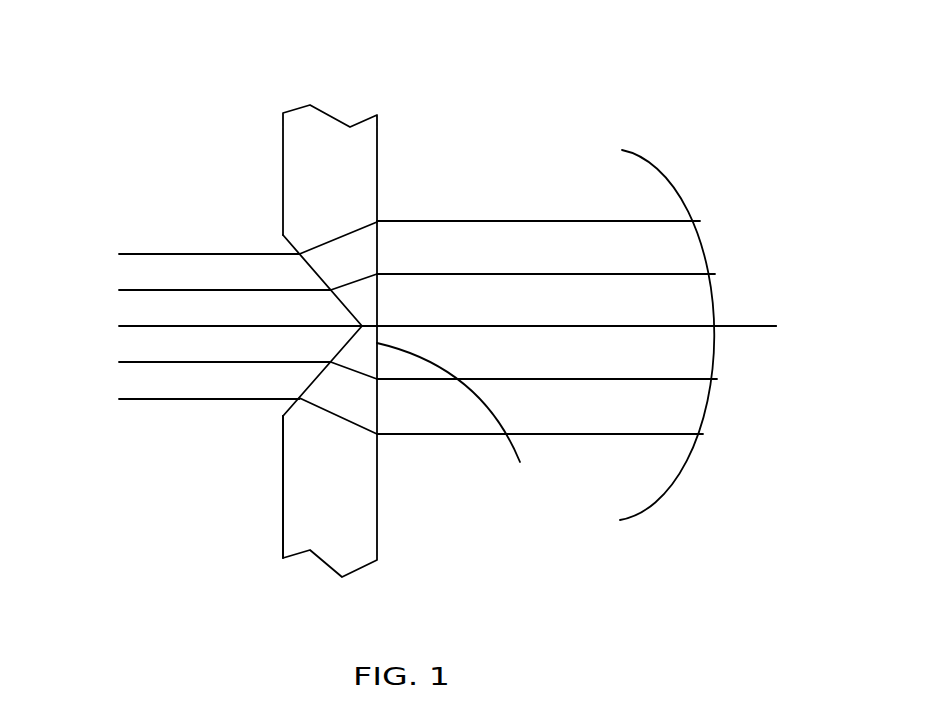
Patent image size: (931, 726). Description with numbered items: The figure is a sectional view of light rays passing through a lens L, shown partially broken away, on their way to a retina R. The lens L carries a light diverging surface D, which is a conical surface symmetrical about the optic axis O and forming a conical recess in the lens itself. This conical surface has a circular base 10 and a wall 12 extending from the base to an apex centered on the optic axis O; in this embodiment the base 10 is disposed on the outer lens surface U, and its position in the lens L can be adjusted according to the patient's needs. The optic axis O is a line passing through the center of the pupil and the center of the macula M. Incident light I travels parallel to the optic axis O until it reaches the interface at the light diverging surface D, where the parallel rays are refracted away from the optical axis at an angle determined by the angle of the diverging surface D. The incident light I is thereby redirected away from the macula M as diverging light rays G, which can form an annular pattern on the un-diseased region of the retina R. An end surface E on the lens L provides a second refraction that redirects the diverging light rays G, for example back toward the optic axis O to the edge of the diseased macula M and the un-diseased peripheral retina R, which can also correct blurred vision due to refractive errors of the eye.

The circular base 10 is at (282, 234).
The wall 12 is at (292, 247).
The incident light I is at (119, 290).
The light diverging surface D is at (306, 269).
The lens L is at (323, 130).
The diverging light rays G is at (410, 274).
The retina R is at (682, 183).
The macula M is at (722, 327).
The optic axis O is at (679, 328).
The end surface E is at (457, 418).
The outer lens surface U is at (280, 528).